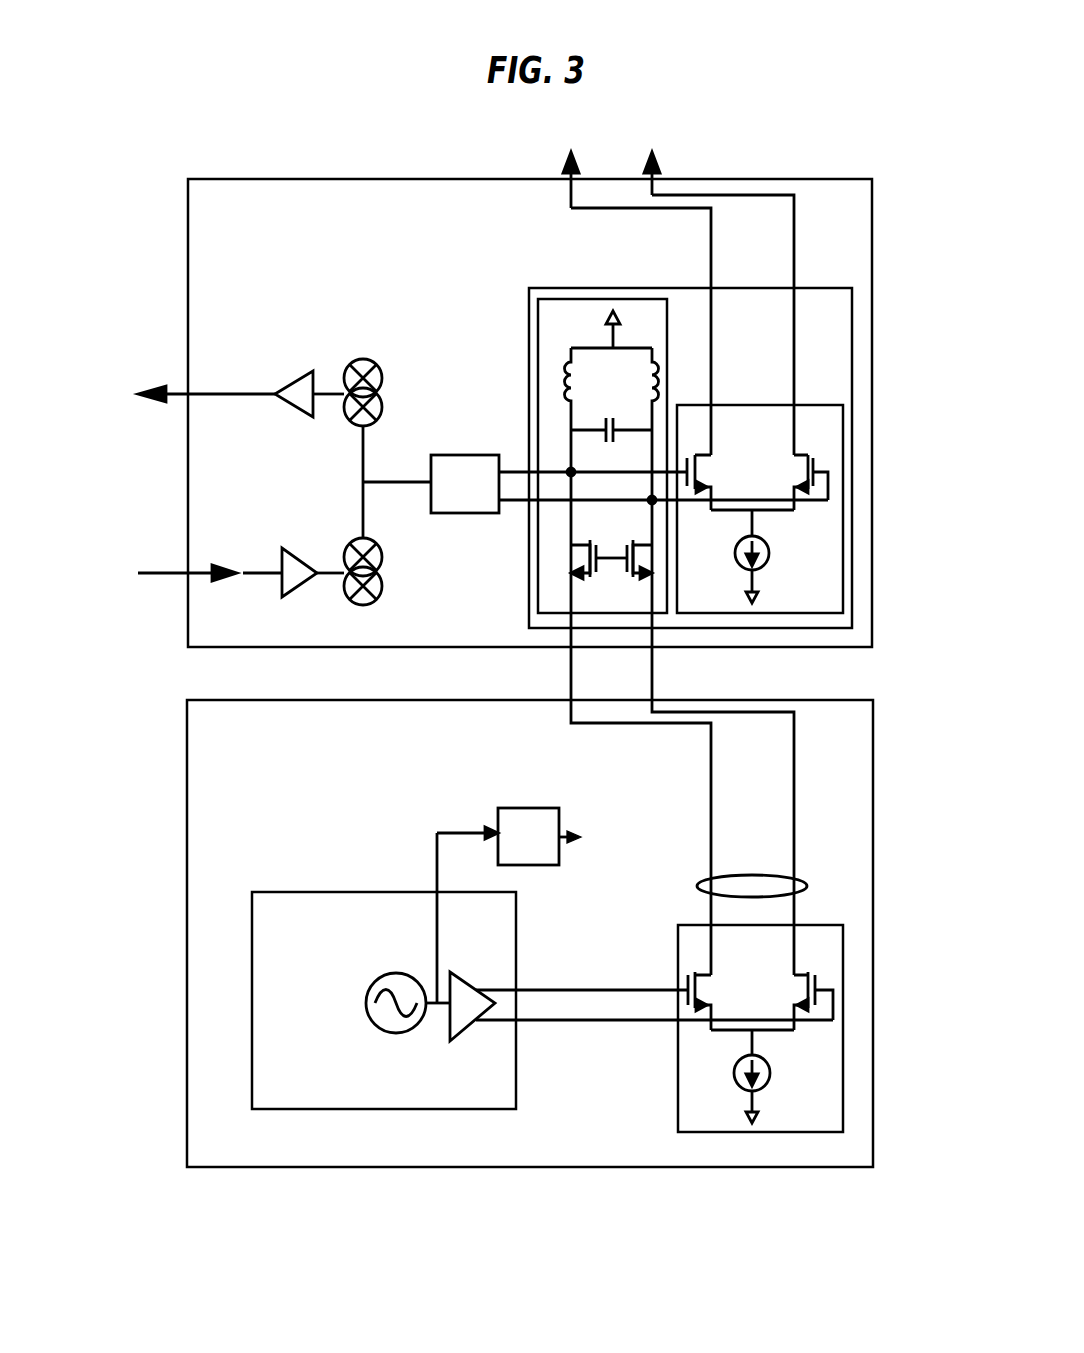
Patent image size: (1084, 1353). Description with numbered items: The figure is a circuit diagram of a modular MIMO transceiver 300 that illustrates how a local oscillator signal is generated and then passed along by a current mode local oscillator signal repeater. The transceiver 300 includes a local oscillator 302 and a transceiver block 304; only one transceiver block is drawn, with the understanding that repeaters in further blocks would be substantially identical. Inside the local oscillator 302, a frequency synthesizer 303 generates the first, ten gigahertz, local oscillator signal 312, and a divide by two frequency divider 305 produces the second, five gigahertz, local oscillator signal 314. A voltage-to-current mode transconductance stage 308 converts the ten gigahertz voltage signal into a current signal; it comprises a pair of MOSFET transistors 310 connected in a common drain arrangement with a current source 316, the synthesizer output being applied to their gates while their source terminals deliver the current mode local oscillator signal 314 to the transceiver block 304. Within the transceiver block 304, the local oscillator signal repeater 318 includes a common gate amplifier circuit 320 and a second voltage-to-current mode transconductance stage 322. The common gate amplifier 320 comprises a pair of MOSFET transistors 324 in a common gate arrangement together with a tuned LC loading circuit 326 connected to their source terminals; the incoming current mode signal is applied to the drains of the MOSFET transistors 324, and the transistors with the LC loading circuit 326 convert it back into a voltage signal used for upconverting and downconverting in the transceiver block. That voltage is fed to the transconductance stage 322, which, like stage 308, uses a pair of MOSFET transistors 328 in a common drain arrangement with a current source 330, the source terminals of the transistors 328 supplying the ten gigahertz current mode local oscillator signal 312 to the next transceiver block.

The modular MIMO transceiver 300 is at (480, 1232).
The local oscillator 302 is at (187, 1082).
The frequency synthesizer 303 is at (252, 970).
The transceiver block 304 is at (188, 497).
The divide by 2 frequency divider 305 is at (530, 808).
The voltage-to-current mode transconductance stage 308 is at (678, 1110).
The MOSFET transistors 310 is at (697, 1010).
The local oscillator signal 312 is at (580, 837).
The current mode local oscillator signal 314 is at (807, 886).
The driver current source 316 is at (768, 1068).
The local oscillator signal repeater 318 is at (529, 301).
The common gate amplifier circuit 320 is at (538, 590).
The voltage-to-current mode transconductance stage 322 is at (843, 547).
The MOSFET transistors 324 is at (583, 577).
The tuned LC loading circuit 326 is at (573, 348).
The MOSFET transistors 328 is at (702, 455).
The current source 330 is at (770, 553).